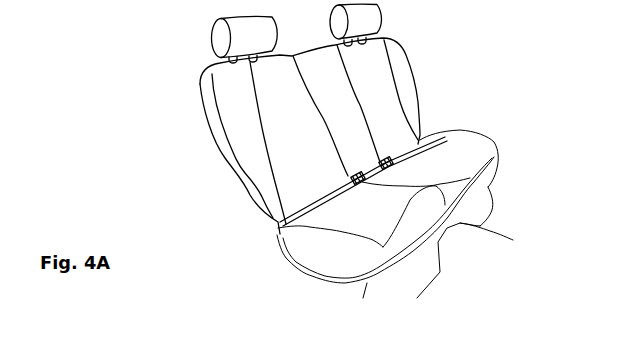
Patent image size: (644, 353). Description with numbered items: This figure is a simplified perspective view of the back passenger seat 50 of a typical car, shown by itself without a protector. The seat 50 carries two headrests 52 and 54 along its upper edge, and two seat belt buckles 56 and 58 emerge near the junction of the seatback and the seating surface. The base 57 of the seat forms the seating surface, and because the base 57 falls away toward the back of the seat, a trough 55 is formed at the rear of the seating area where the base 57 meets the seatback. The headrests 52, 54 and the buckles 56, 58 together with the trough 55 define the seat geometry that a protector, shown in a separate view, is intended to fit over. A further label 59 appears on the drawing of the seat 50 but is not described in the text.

The back passenger seat 50 is at (186, 116).
The headrest 52 is at (340, 15).
The headrest 54 is at (222, 38).
The trough 55 is at (290, 213).
The seat belt buckle 56 is at (387, 163).
The base 57 is at (353, 227).
The seat belt buckle 58 is at (362, 178).
The seatback 59 is at (184, 143).